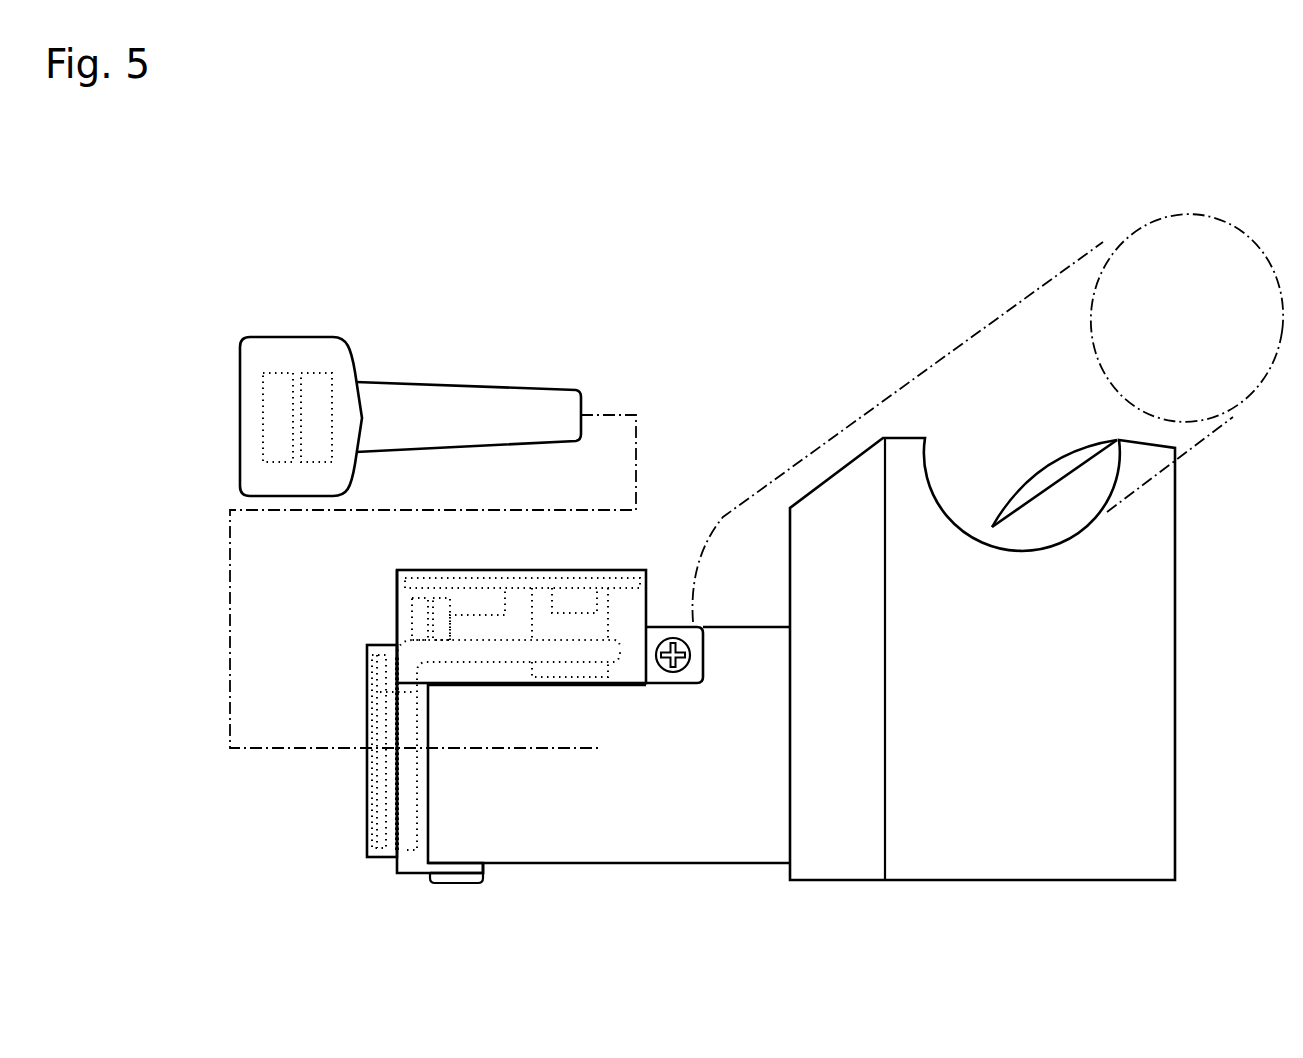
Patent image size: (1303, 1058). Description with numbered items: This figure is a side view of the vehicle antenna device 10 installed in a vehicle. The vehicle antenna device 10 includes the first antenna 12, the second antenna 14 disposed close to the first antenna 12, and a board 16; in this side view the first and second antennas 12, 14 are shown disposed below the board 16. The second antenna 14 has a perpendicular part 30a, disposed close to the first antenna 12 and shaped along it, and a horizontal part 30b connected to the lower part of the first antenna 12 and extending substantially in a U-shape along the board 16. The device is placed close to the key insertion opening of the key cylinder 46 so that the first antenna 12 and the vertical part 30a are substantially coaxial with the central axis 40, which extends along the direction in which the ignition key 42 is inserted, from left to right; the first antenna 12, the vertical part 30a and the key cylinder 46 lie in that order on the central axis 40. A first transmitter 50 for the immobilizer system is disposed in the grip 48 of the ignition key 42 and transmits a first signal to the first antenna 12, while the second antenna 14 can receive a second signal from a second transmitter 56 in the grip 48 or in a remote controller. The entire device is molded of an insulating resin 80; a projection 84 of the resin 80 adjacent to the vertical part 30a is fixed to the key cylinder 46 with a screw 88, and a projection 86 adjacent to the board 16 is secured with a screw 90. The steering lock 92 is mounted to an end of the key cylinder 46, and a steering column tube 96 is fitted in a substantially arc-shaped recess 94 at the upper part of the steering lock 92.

The vehicle antenna device 10 is at (407, 569).
The first antenna 12 is at (378, 861).
The second antenna 14 is at (441, 735).
The board 16 is at (577, 578).
The perpendicular part 30a is at (367, 678).
The horizontal part 30b is at (397, 634).
The central axis 40 is at (497, 751).
The ignition key 42 is at (445, 402).
The key cylinder 46 is at (687, 812).
The grip 48 is at (286, 350).
The first transmitter 50 is at (317, 438).
The second transmitter 56 is at (278, 438).
The insulating resin 80 is at (509, 570).
The projection 84 is at (467, 870).
The projection 86 is at (657, 628).
The screw 88 is at (443, 883).
The screw 90 is at (679, 671).
The steering lock 92 is at (1001, 838).
The recess 94 is at (1063, 493).
The steering column tube 96 is at (1193, 438).